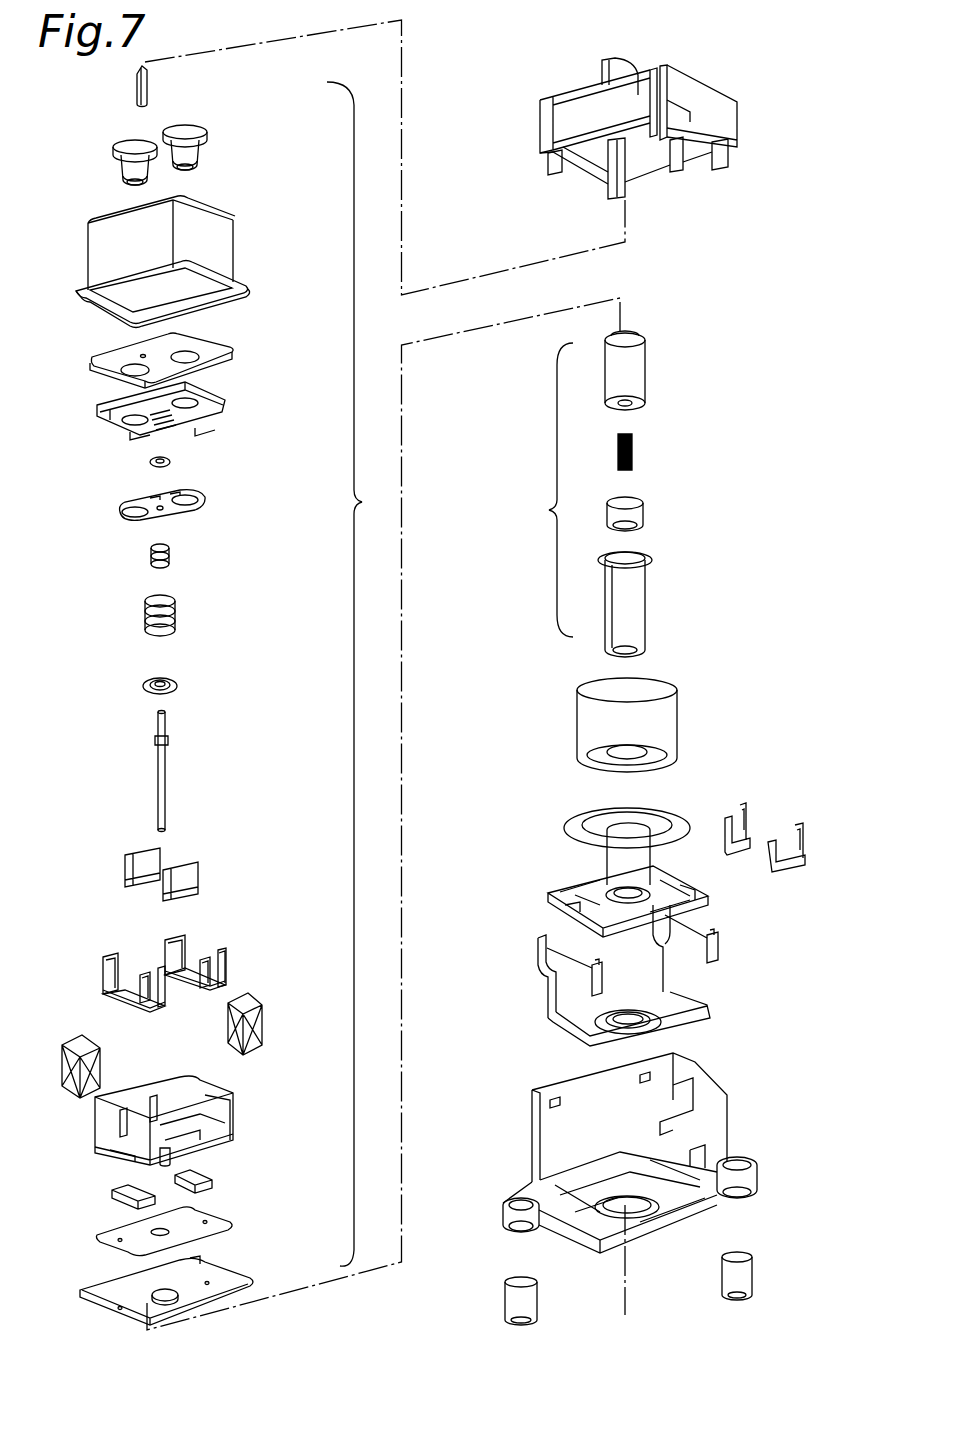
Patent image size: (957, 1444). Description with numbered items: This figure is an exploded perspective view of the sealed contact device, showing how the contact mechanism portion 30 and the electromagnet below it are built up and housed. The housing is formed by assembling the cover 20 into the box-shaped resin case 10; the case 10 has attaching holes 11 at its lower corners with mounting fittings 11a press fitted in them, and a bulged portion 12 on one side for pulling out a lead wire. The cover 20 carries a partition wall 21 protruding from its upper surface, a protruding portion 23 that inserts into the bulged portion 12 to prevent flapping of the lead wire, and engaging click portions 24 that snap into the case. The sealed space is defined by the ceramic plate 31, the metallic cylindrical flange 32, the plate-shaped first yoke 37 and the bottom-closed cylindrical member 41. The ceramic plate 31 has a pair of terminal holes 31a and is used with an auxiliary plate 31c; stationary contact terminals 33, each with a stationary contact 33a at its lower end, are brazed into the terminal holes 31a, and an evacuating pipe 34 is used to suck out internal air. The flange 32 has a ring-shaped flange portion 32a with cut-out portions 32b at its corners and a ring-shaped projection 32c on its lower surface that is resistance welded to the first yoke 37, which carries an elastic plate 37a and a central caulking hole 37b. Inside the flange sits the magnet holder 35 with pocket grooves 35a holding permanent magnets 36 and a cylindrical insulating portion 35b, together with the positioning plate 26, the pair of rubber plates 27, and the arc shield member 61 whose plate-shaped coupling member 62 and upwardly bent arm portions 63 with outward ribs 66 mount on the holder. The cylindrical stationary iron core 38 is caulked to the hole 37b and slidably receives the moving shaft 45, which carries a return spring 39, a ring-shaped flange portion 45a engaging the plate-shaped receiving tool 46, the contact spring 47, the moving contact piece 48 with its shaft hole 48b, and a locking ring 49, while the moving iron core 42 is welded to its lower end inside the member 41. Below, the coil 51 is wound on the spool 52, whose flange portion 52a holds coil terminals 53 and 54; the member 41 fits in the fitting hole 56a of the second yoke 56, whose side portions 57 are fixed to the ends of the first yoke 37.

The case 10 is at (630, 1156).
The attaching holes 11 is at (745, 1195).
The mounting fittings 11a is at (740, 1268).
The bulged portion 12 is at (685, 1102).
The cover 20 is at (665, 141).
The partition wall 21 is at (600, 45).
The protruding portion 23 is at (678, 172).
The engaging click portion 24 is at (556, 175).
The positioning plate 26 is at (138, 872).
The rubber plates 27 is at (212, 1183).
The contact mechanism portion 30 is at (549, 510).
The ceramic plate 31 is at (168, 364).
The terminal holes 31a is at (133, 374).
The auxiliary plate 31c is at (225, 410).
The metallic cylindrical flange 32 is at (163, 268).
The ring-shaped flange portion 32a is at (115, 283).
The cut-out portion 32b is at (246, 292).
The ring-shaped projection 32c is at (78, 300).
The stationary contact terminal 33 is at (118, 140).
The stationary contact 33a is at (135, 185).
The evacuating pipe 34 is at (150, 97).
The magnet holder 35 is at (165, 1121).
The pocket groove 35a is at (210, 1112).
The cylindrical insulating portion 35b is at (172, 1155).
The permanent magnet 36 is at (262, 1025).
The plate-shaped first yoke 37 is at (190, 1281).
The elastic plate 37a is at (217, 1228).
The caulking hole 37b is at (190, 1292).
The cylindrical stationary iron core 38 is at (640, 377).
The return spring 39 is at (635, 448).
The bottom-closed cylindrical member 41 is at (635, 592).
The moving iron core 42 is at (645, 515).
The moving shaft 45 is at (200, 771).
The ring-shaped flange portion 45a is at (170, 742).
The plate-shaped receiving tool 46 is at (180, 688).
The contact spring 47 is at (172, 560).
The moving contact piece 48 is at (194, 510).
The shaft hole 48b is at (163, 512).
The locking ring 49 is at (172, 462).
The coil 51 is at (668, 712).
The spool 52 is at (589, 872).
The flange portion 52a is at (607, 853).
The coil terminal 53 is at (796, 832).
The coil terminal 54 is at (748, 815).
The second yoke 56 is at (648, 986).
The fitting hole 56a is at (620, 1025).
The side portions 57 is at (570, 988).
The arc shield member 61 is at (113, 992).
The plate-shaped coupling member 62 is at (183, 990).
The arm portions 63 is at (172, 945).
The outward rib 66 is at (190, 940).